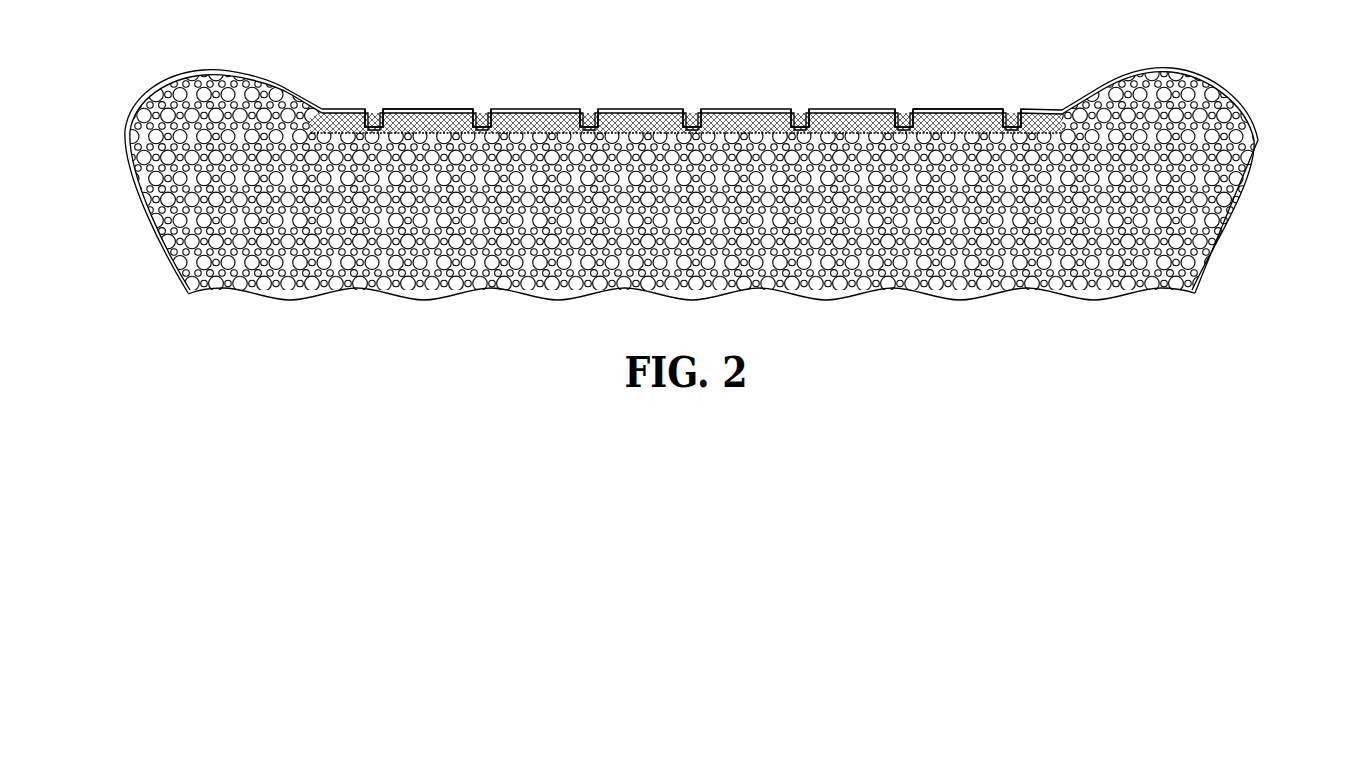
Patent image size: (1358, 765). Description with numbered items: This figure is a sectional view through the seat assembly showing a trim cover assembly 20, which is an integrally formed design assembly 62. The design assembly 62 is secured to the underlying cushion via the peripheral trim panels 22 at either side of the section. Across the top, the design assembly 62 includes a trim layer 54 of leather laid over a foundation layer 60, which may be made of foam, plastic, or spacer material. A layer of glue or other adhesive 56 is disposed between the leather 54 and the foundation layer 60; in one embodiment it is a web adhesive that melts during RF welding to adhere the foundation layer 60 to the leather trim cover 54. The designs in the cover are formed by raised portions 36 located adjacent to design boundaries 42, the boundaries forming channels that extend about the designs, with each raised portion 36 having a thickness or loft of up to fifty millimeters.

The trim cover assembly 20 is at (530, 102).
The peripheral trim panels 22 is at (130, 110).
The raised portions 36 is at (405, 102).
The design boundaries 42 is at (483, 116).
The trim layer 54 is at (745, 112).
The adhesive 56 is at (828, 108).
The foundation layer 60 is at (642, 122).
The design assembly 62 is at (937, 105).